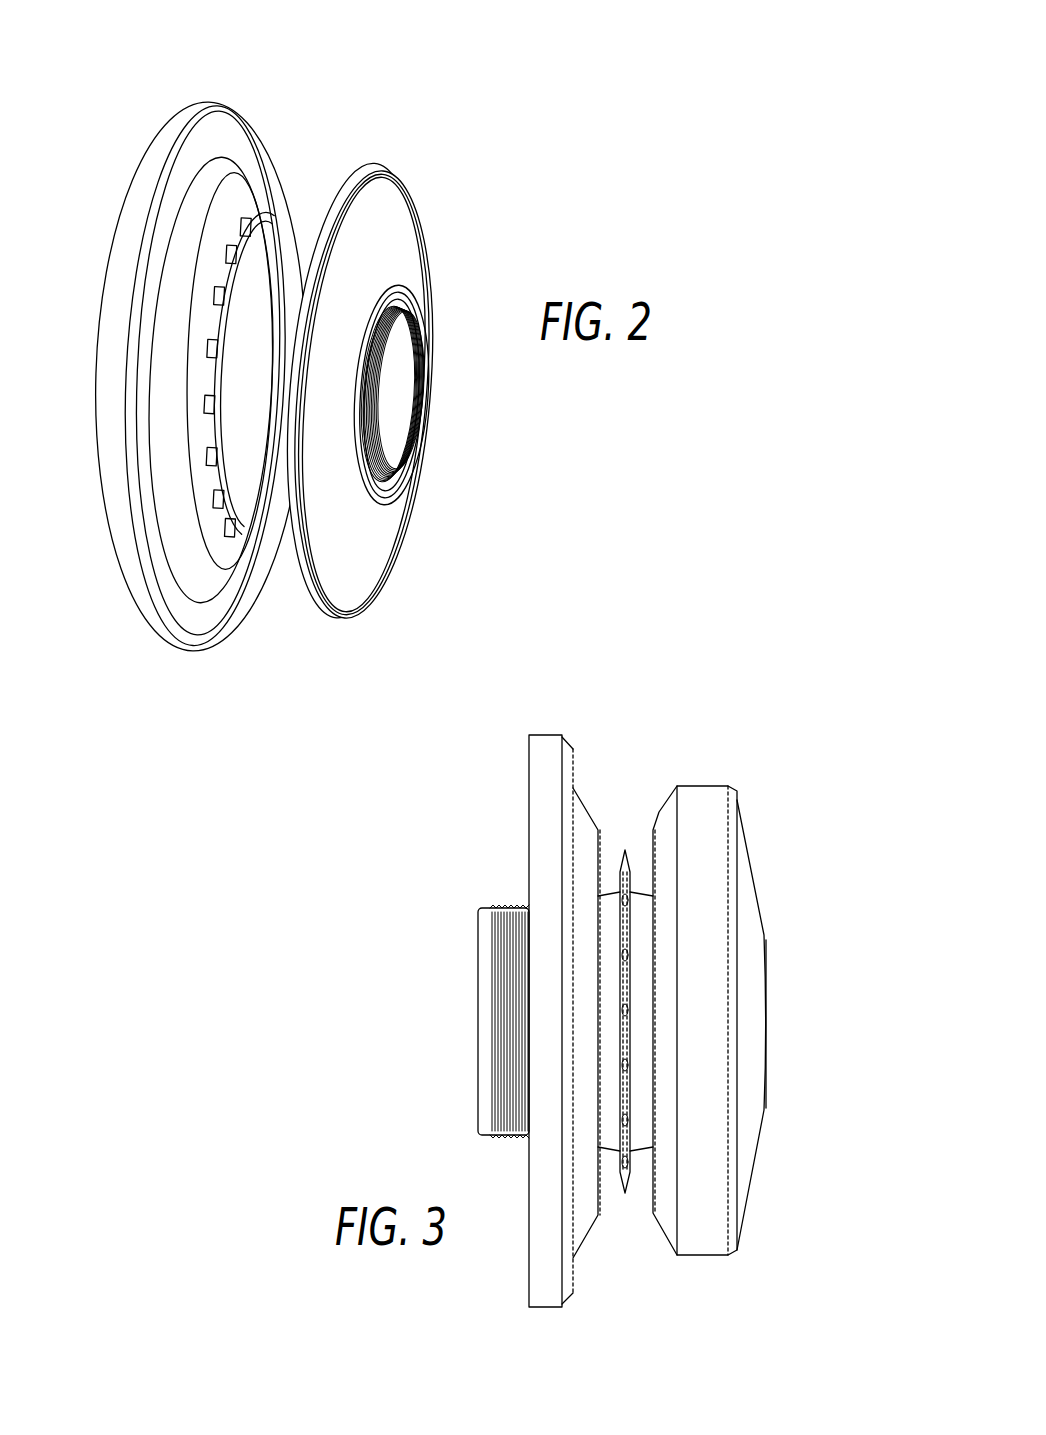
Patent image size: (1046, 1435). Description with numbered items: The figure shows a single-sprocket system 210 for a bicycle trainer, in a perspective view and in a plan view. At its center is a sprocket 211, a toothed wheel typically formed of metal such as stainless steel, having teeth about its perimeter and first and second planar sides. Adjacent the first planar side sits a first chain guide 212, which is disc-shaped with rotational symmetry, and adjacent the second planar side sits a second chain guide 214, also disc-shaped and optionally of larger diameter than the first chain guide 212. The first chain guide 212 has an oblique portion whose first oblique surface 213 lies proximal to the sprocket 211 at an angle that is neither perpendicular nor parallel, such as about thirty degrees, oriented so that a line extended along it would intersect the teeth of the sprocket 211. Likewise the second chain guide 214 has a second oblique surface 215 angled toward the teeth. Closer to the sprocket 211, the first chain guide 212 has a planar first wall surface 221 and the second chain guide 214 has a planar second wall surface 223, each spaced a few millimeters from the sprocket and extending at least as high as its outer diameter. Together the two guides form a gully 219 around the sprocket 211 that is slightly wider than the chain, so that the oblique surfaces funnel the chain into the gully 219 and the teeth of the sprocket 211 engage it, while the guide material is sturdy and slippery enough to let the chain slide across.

In FIG. 2, the single-sprocket system 210 is at (285, 376).
In FIG. 3, the single-sprocket system 210 is at (649, 1006).
In FIG. 2, the sprocket 211 is at (205, 568).
In FIG. 3, the sprocket 211 is at (626, 856).
In FIG. 2, the first chain guide 212 is at (333, 184).
In FIG. 3, the first chain guide 212 is at (710, 1258).
In FIG. 3, the first oblique surface 213 is at (660, 800).
In FIG. 2, the second chain guide 214 is at (120, 563).
In FIG. 3, the second chain guide 214 is at (548, 1308).
In FIG. 3, the second oblique surface 215 is at (589, 803).
In FIG. 3, the gully 219 is at (633, 1218).
In FIG. 3, the first wall surface 221 is at (650, 848).
In FIG. 3, the second wall surface 223 is at (600, 843).